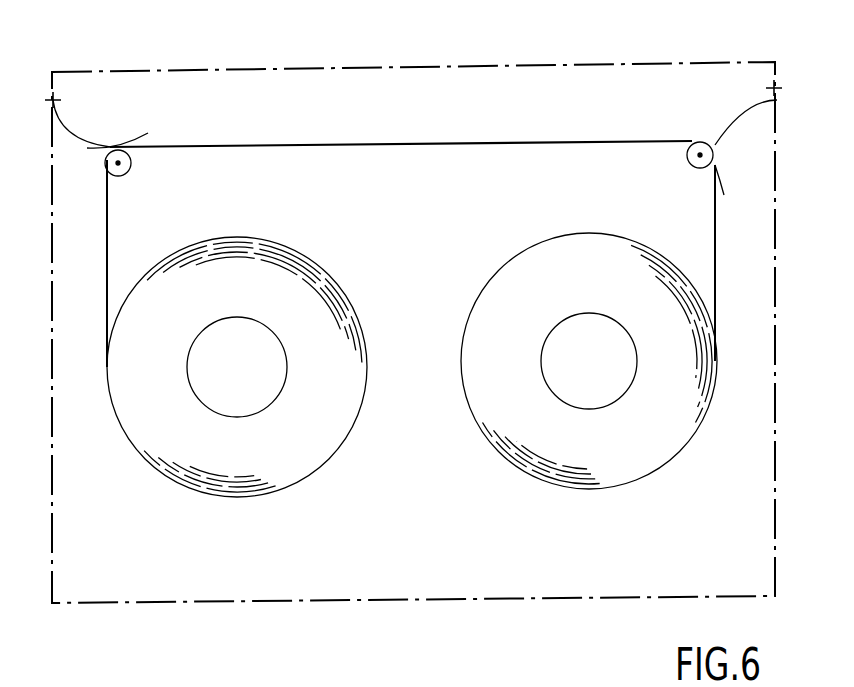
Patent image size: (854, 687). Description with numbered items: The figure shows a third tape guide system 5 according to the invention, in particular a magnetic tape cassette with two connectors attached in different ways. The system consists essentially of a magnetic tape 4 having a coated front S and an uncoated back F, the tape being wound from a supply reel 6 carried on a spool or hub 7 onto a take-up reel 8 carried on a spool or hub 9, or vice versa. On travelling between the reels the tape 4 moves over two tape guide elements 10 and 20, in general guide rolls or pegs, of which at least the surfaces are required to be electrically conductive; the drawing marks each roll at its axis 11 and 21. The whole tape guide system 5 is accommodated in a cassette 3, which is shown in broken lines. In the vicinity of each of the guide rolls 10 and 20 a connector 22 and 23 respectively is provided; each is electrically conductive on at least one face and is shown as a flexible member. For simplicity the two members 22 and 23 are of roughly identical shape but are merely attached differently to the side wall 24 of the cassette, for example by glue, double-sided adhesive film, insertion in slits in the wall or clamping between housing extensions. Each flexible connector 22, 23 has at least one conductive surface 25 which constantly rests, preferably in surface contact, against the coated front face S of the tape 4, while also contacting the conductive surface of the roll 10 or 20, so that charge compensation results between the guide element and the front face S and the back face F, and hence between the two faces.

The cassette 3 is at (393, 65).
The magnetic tape 4 is at (441, 143).
The tape guide system 5 is at (528, 116).
The coated front S is at (234, 144).
The uncoated back F is at (333, 148).
The supply reel 6 is at (303, 445).
The spool or hub 7 is at (268, 387).
The take-up reel 8 is at (492, 390).
The spool or hub 9 is at (557, 357).
The tape guide element 10 is at (118, 163).
The left roller axis 11 is at (112, 176).
The tape guide element 20 is at (702, 157).
The right roller axis 21 is at (683, 157).
The connector 22 is at (70, 125).
The connector 23 is at (752, 103).
The side wall 24 is at (783, 106).
The conductive surface 25 is at (92, 150).